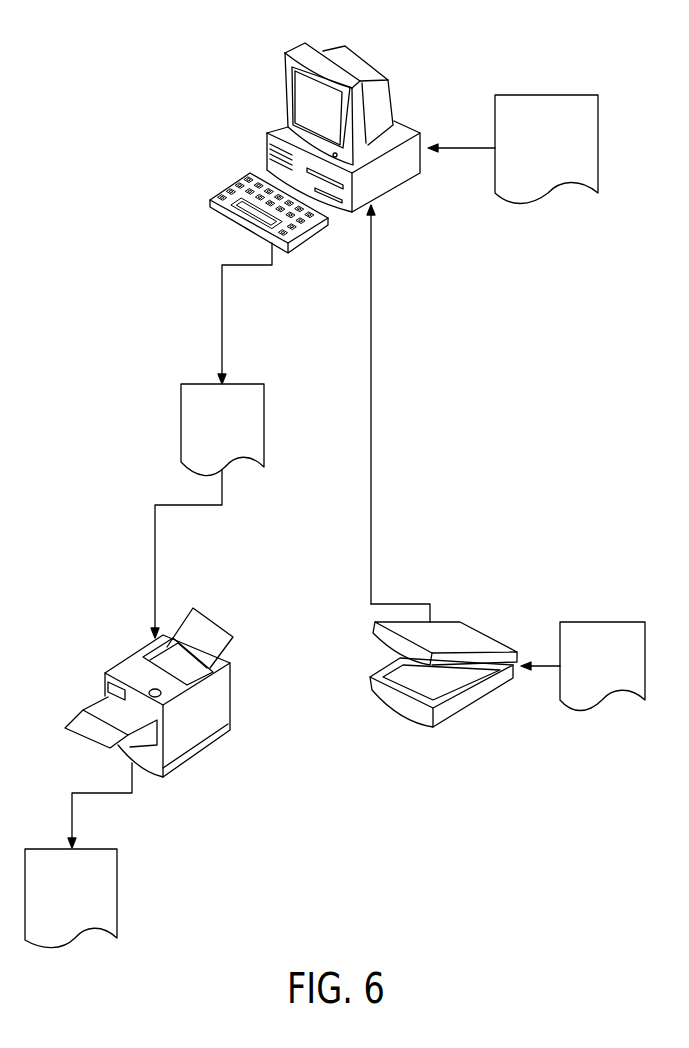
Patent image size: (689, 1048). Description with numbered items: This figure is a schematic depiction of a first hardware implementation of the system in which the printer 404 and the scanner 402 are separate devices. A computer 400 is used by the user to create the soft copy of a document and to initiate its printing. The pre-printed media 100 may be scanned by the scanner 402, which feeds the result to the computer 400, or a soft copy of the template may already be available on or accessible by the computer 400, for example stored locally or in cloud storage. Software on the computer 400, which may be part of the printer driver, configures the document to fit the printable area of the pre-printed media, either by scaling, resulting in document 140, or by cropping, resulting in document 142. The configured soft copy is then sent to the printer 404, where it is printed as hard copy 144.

The computer 400 is at (367, 58).
The pre-printed media 100 is at (573, 94).
The document 140 is at (174, 430).
The document 142 is at (180, 410).
The hard copy 144 is at (47, 848).
The printer 404 is at (180, 764).
The scanner 402 is at (450, 717).